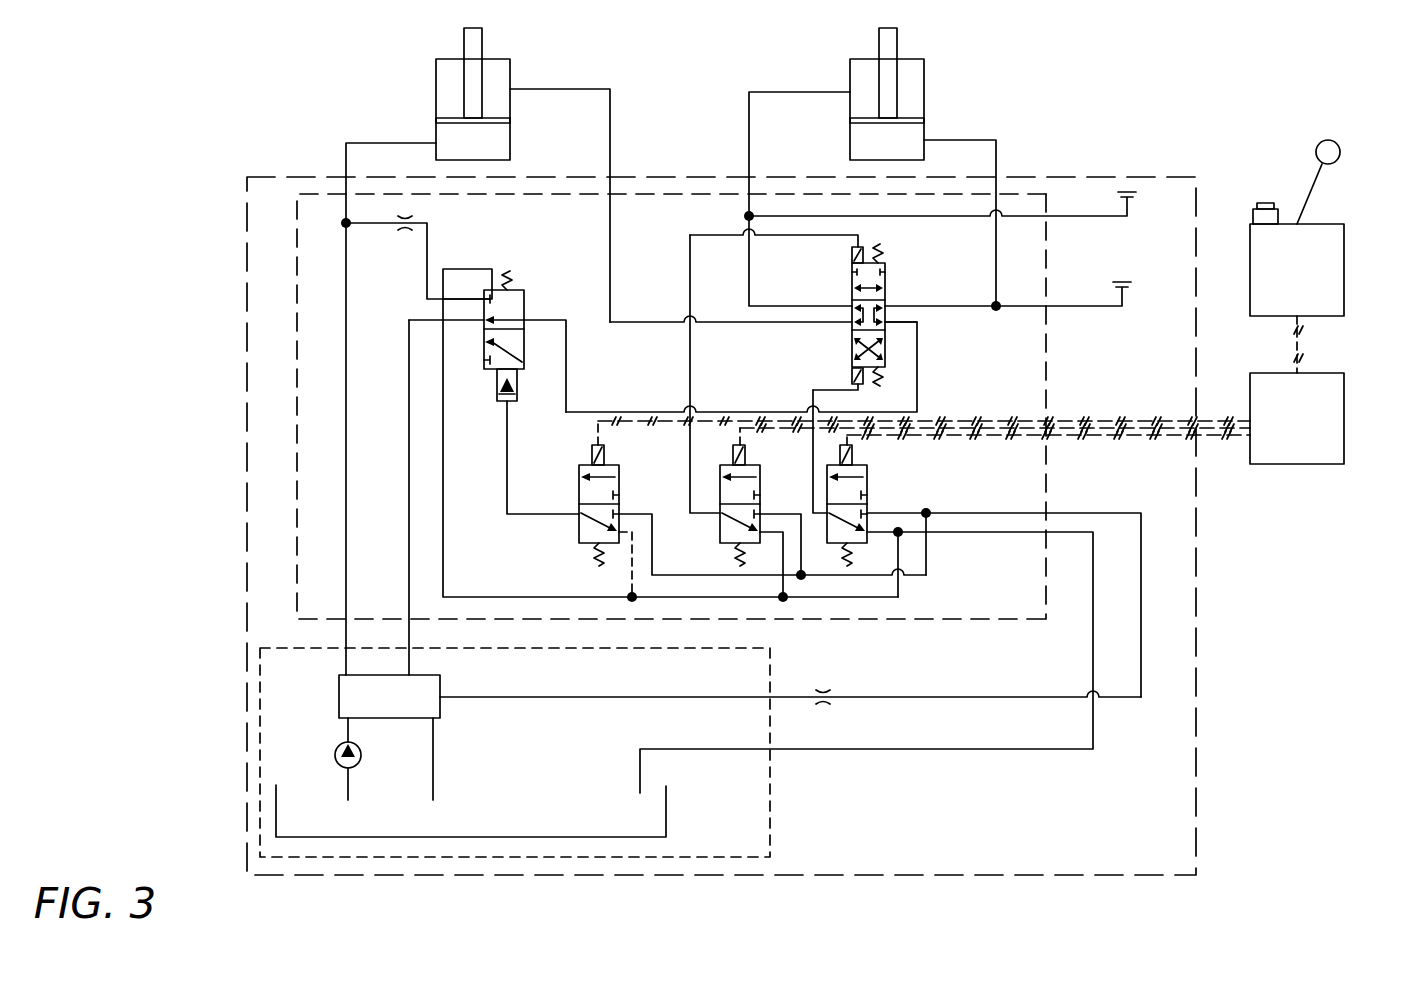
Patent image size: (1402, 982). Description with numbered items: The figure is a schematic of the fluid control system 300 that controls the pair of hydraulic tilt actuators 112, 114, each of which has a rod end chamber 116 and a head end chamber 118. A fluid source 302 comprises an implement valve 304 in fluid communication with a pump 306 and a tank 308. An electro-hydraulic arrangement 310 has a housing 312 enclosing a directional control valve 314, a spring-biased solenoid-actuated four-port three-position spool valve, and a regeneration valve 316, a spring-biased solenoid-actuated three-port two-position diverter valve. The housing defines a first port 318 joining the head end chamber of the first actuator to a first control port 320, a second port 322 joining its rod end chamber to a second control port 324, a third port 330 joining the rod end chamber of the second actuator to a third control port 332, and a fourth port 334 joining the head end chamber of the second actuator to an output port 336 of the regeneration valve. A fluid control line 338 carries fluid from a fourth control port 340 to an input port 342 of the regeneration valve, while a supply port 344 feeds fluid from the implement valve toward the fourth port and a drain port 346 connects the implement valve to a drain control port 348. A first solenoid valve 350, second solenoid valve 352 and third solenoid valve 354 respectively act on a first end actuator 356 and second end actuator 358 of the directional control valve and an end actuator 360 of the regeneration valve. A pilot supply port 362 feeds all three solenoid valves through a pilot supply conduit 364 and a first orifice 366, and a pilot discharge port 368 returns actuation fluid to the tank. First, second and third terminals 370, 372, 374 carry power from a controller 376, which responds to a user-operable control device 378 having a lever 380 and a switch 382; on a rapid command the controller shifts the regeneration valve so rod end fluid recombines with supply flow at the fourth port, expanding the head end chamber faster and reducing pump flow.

The tilt actuator 112 is at (930, 57).
The tilt actuator 114 is at (516, 57).
The rod end chamber 116 is at (445, 87).
The head end chamber 118 is at (450, 155).
The fluid control system 300 is at (1200, 173).
The fluid source 302 is at (778, 826).
The implement valve 304 is at (372, 707).
The pump 306 is at (362, 758).
The tank 308 is at (668, 800).
The electro-hydraulic arrangement 310 is at (1055, 251).
The housing 312 is at (1047, 266).
The directional control valve 314 is at (893, 261).
The regeneration valve 316 is at (528, 287).
The first port 318 is at (768, 194).
The first control port 320 is at (852, 305).
The second port 322 is at (997, 194).
The second control port 324 is at (888, 308).
The third port 330 is at (612, 193).
The third control port 332 is at (852, 323).
The fourth port 334 is at (340, 193).
The output port 336 is at (487, 296).
The fluid control line 338 is at (603, 410).
The fourth control port 340 is at (888, 326).
The input port 342 is at (528, 317).
The supply port 344 is at (345, 617).
The drain port 346 is at (408, 617).
The drain control port 348 is at (484, 322).
The first solenoid valve 350 is at (868, 478).
The second solenoid valve 352 is at (762, 477).
The third solenoid valve 354 is at (622, 477).
The first end actuator 356 is at (852, 379).
The second end actuator 358 is at (852, 252).
The end actuator 360 is at (517, 397).
The pilot supply port 362 is at (1047, 514).
The pilot supply conduit 364 is at (599, 698).
The first orifice 366 is at (828, 708).
The pilot discharge port 368 is at (1048, 534).
The first terminal 370 is at (1049, 437).
The second terminal 372 is at (1047, 436).
The third terminal 374 is at (1047, 421).
The controller 376 is at (1280, 430).
The user-operable control device 378 is at (1352, 291).
The lever 380 is at (1320, 186).
The switch 382 is at (1262, 203).